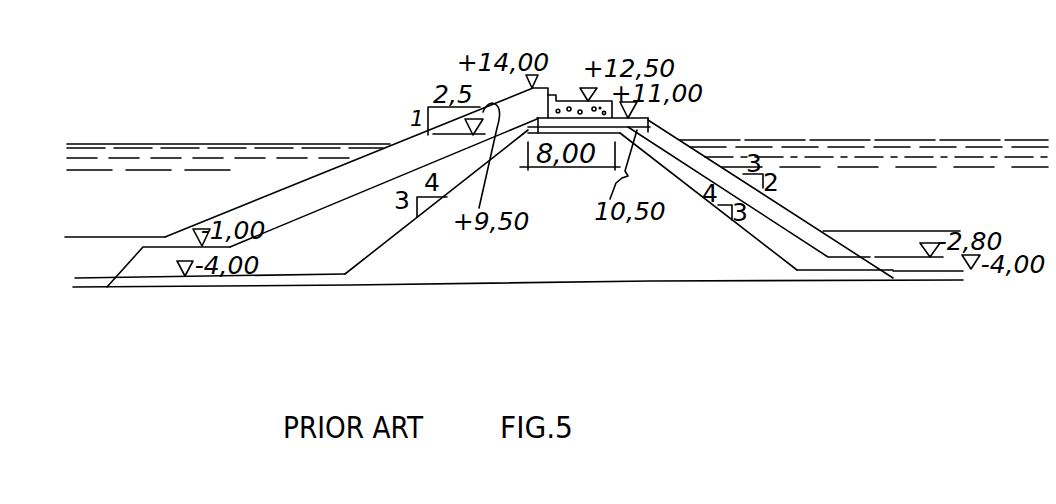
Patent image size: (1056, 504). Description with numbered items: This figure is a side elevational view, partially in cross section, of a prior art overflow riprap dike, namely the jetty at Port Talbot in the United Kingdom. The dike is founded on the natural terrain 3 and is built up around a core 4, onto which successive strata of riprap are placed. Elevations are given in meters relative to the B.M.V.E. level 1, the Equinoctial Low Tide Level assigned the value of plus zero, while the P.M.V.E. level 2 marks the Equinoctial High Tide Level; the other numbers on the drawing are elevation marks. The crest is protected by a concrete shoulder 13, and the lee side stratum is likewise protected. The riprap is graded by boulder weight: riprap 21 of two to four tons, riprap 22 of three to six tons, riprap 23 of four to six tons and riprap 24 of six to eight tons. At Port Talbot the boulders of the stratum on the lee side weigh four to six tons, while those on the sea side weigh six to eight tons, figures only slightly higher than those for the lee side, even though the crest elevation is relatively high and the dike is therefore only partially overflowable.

The B.M.V.E. level 1 is at (93, 237).
The P.M.V.E. level 2 is at (166, 143).
The natural terrain 3 is at (622, 268).
The core 4 is at (528, 258).
The concrete shoulder 13 is at (557, 93).
The riprap of 2 to 4 t 21 is at (657, 163).
The riprap of 3 to 6 t 22 is at (330, 248).
The riprap of 4 to 6 t 23 is at (780, 213).
The riprap of 6 to 8 t 24 is at (294, 207).